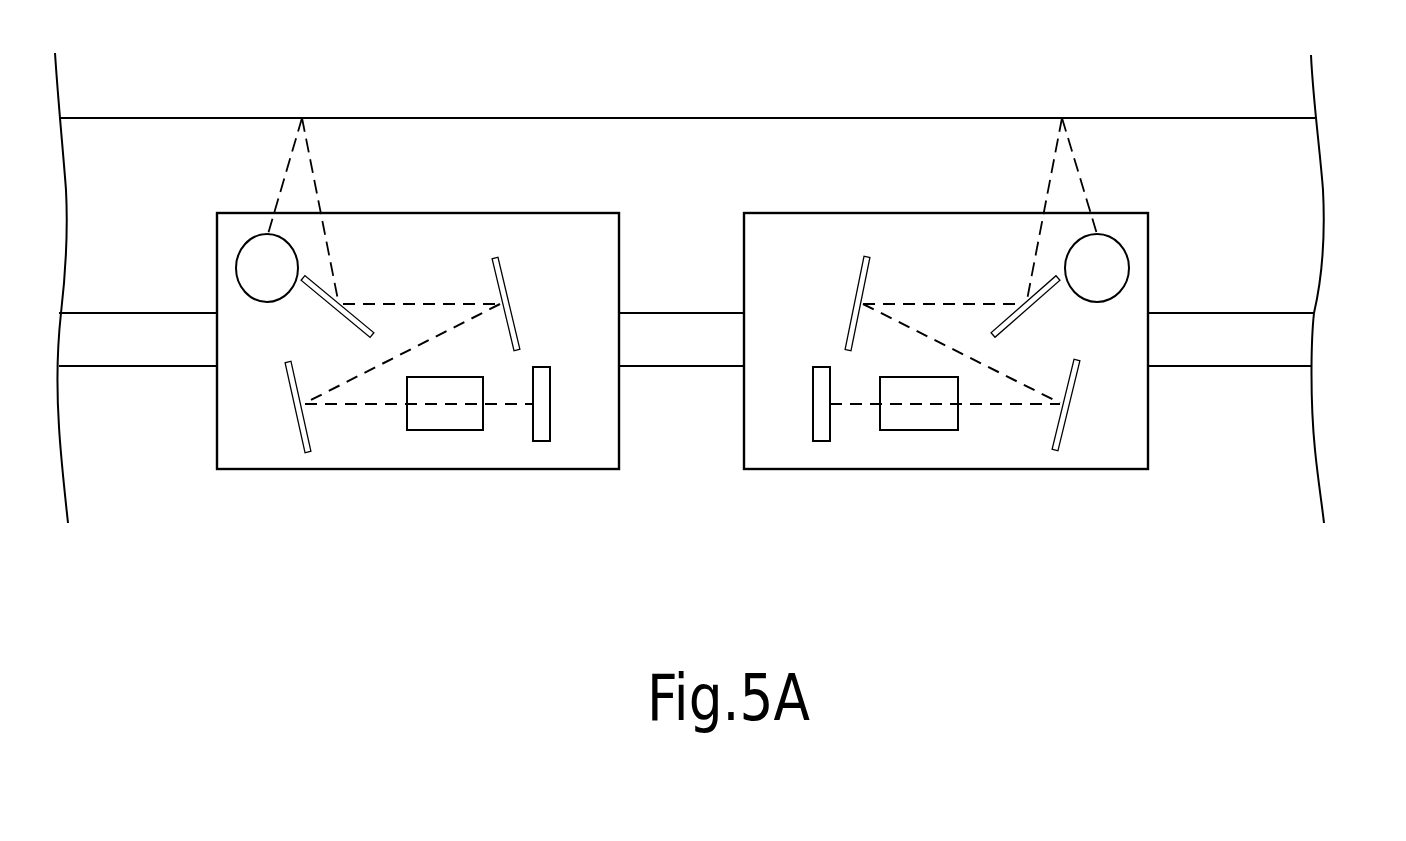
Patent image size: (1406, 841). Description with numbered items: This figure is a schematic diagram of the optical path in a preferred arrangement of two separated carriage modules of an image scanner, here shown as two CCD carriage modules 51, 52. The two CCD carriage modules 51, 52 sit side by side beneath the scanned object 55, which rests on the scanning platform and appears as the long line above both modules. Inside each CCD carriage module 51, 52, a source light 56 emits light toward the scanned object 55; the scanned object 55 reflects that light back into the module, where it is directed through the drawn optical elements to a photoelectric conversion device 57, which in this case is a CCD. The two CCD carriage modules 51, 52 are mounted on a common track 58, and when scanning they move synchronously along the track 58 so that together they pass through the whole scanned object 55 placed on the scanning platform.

The CCD carriage module 51 is at (373, 235).
The CCD carriage module 52 is at (1127, 233).
The scanned object 55 is at (733, 117).
The source light 56 is at (310, 147).
The photoelectric conversion device 57 is at (542, 427).
The track 58 is at (1267, 340).